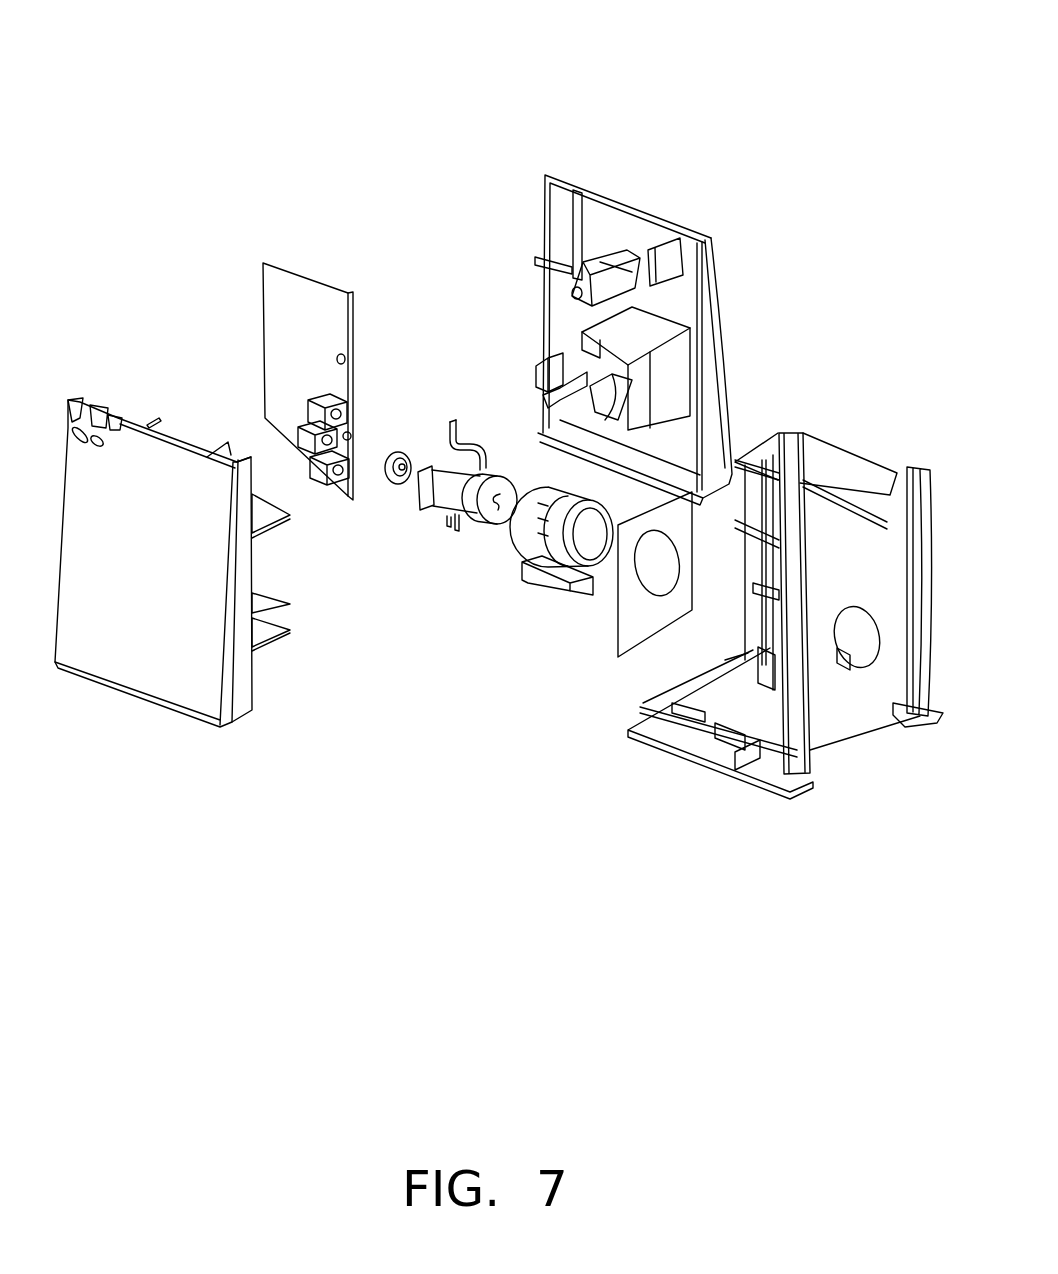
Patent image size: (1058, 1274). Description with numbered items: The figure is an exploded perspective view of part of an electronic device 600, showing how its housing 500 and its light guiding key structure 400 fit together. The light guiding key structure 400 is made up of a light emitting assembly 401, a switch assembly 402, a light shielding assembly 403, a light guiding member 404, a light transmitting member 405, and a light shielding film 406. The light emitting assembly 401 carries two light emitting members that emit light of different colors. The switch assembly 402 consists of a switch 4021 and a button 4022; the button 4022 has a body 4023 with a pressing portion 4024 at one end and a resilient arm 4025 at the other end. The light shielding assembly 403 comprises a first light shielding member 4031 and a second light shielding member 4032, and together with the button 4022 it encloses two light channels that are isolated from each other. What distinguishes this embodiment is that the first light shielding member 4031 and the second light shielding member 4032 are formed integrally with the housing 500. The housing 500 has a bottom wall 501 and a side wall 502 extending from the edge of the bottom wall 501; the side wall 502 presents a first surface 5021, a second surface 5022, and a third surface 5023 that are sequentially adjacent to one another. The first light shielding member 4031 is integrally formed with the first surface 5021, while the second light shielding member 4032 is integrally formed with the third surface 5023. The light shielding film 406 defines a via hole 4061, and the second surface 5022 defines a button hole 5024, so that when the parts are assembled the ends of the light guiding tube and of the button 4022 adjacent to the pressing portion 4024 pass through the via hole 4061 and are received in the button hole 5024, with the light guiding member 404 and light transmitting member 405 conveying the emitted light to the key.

The electronic device 600 is at (485, 58).
The light guiding key structure 400 is at (575, 700).
The light emitting assembly 401 is at (322, 478).
The switch assembly 402 is at (465, 645).
The switch 4021 is at (338, 478).
The button 4022 is at (503, 598).
The body 4023 is at (447, 498).
The pressing portion 4024 is at (488, 516).
The resilient arm 4025 is at (474, 434).
The light shielding assembly 403 is at (358, 205).
The first light shielding member 4031 is at (617, 333).
The second light shielding member 4032 is at (258, 512).
The light guiding member 404 is at (394, 455).
The light transmitting member 405 is at (558, 585).
The light shielding film 406 is at (630, 605).
The via hole 4061 is at (665, 548).
The housing 500 is at (850, 843).
The bottom wall 501 is at (777, 712).
The side wall 502 is at (822, 712).
The first surface 5021 is at (683, 297).
The second surface 5022 is at (885, 505).
The third surface 5023 is at (138, 675).
The button hole 5024 is at (860, 665).